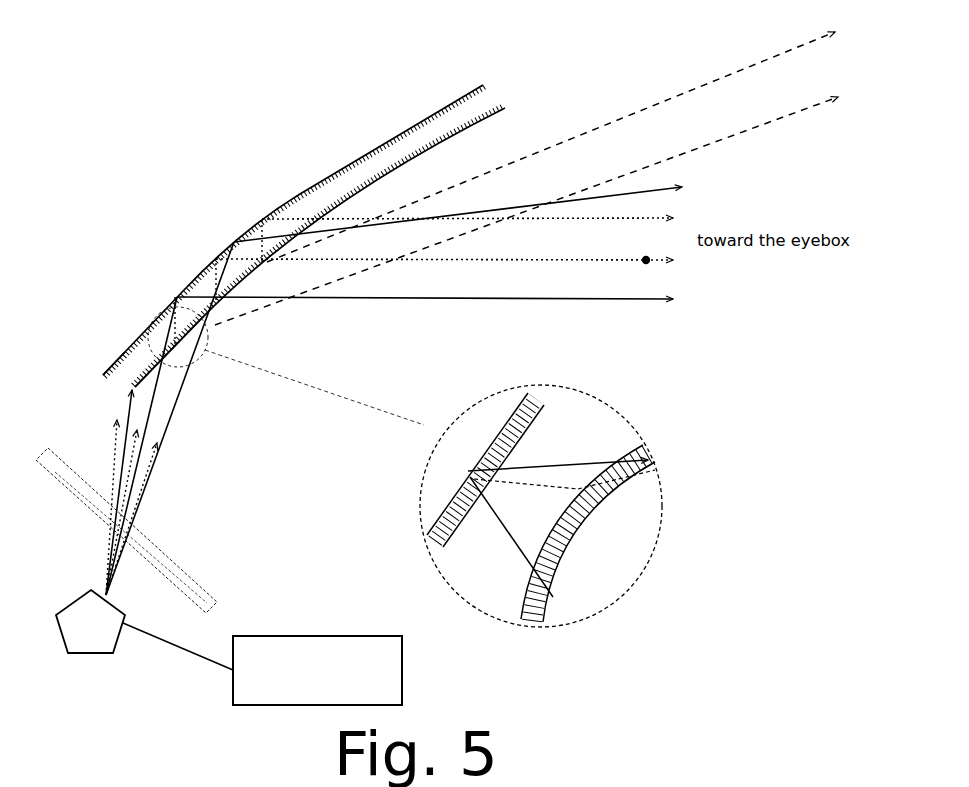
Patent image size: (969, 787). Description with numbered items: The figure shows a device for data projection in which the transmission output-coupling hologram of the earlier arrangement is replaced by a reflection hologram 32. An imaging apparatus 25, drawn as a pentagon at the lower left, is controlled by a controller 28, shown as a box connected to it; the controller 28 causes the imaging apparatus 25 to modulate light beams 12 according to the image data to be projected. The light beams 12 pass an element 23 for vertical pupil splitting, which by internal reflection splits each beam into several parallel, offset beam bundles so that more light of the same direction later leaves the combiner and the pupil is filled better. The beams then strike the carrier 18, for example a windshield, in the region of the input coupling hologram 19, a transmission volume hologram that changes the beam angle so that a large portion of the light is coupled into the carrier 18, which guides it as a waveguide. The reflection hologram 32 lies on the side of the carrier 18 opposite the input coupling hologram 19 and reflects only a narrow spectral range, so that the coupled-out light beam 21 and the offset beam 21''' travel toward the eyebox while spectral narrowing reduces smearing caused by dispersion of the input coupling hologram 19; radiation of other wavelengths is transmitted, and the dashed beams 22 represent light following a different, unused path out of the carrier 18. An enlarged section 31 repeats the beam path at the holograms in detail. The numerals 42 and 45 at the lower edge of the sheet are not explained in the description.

The light beams 12 is at (188, 383).
The carrier 18 is at (120, 346).
The input coupling hologram 19 is at (430, 153).
The light beam 21 is at (460, 392).
The reflected light ray toward eyebox 21''' is at (706, 226).
The ghost reflection rays 22 is at (617, 125).
The element for vertical pupil splitting 23 is at (181, 568).
The imaging apparatus 25 is at (93, 654).
The controller 28 is at (296, 633).
The enlarged section 31 is at (652, 558).
The reflection hologram 32 is at (305, 190).
The reference element 42 is at (288, 780).
The reference element 45 is at (118, 780).